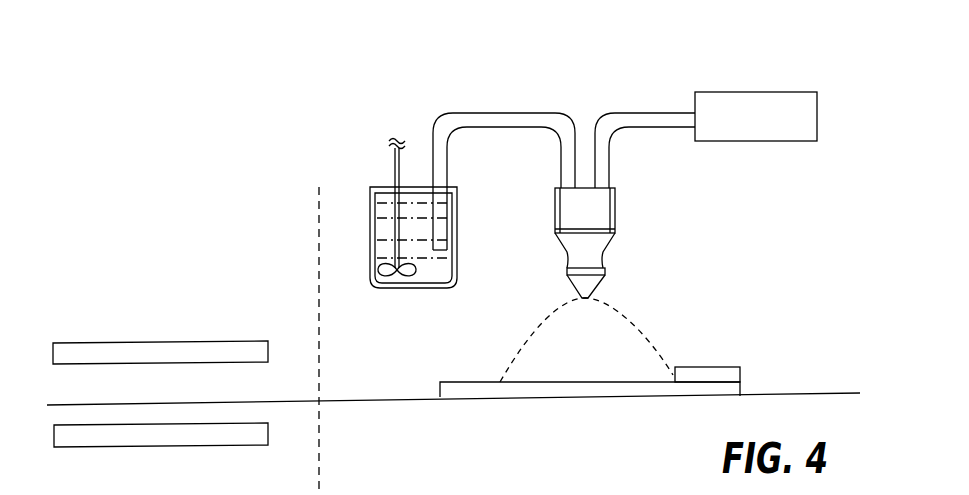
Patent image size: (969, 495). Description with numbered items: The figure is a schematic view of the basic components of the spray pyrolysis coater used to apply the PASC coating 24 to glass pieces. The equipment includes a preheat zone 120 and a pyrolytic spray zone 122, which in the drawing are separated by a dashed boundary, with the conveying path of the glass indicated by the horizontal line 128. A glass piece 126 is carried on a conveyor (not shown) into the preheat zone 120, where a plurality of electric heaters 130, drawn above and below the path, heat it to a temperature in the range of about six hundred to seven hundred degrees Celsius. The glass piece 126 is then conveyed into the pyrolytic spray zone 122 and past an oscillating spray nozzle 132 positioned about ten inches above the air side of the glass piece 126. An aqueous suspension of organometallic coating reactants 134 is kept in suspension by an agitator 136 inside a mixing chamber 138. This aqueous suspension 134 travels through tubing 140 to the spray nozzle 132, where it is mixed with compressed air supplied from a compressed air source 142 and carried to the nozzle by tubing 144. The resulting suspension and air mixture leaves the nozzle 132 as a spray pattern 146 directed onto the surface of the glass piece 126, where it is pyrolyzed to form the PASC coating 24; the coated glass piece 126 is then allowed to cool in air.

The PASC coating 24 is at (741, 370).
The preheat zone 120 is at (159, 176).
The pyrolytic spray zone 122 is at (562, 94).
The glass piece 126 is at (742, 388).
The conveyor / substrate path 128 is at (55, 404).
The electric heaters 130 is at (177, 343).
The spray nozzle 132 is at (617, 222).
The aqueous suspension of organometallic coating reactants 134 is at (382, 251).
The agitator 136 is at (389, 152).
The mixing chamber 138 is at (374, 197).
The tubing 140 is at (469, 112).
The compressed air source 142 is at (745, 92).
The tubing 144 is at (652, 112).
The spray pattern 146 is at (631, 322).